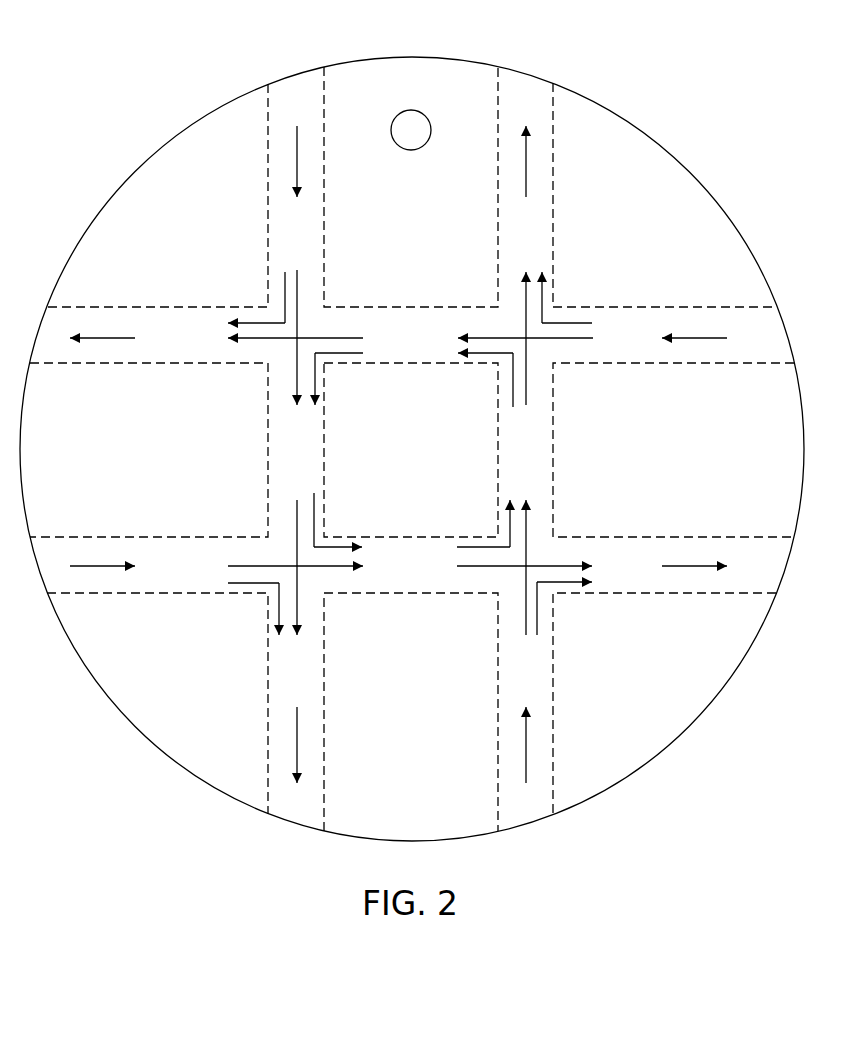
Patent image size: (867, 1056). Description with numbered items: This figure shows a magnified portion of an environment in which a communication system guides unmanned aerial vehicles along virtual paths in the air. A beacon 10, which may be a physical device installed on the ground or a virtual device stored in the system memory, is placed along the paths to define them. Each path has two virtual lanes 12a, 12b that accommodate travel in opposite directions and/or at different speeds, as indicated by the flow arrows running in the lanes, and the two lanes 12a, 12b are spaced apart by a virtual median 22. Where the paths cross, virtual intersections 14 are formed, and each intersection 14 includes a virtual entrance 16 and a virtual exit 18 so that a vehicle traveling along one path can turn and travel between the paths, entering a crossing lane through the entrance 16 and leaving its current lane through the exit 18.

The beacon 10 is at (414, 110).
The virtual lane 12a is at (297, 95).
The virtual lane 12b is at (530, 95).
The virtual intersection 14 is at (338, 292).
The virtual entrance 16 is at (250, 322).
The virtual exit 18 is at (283, 273).
The virtual median 22 is at (373, 78).